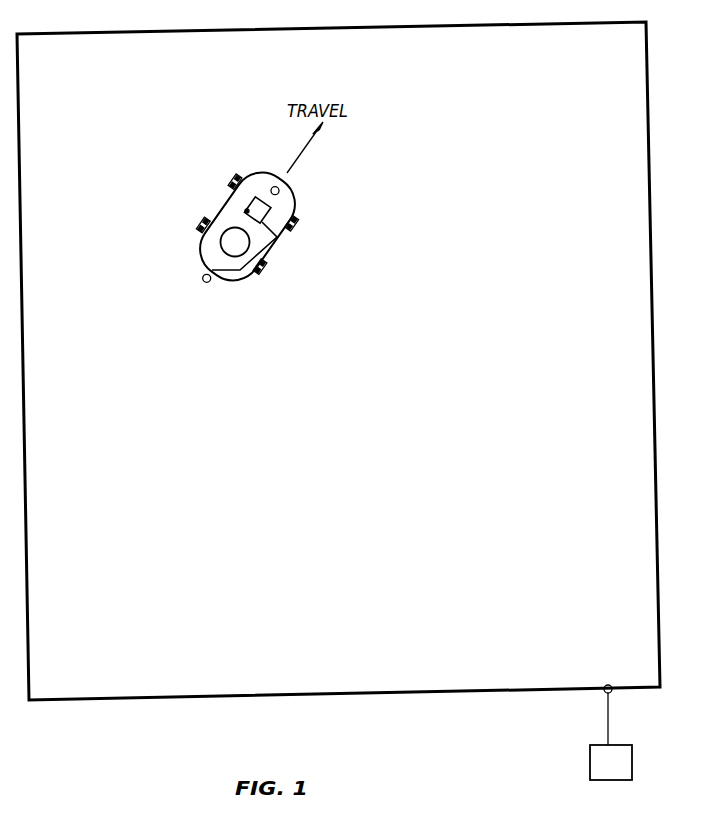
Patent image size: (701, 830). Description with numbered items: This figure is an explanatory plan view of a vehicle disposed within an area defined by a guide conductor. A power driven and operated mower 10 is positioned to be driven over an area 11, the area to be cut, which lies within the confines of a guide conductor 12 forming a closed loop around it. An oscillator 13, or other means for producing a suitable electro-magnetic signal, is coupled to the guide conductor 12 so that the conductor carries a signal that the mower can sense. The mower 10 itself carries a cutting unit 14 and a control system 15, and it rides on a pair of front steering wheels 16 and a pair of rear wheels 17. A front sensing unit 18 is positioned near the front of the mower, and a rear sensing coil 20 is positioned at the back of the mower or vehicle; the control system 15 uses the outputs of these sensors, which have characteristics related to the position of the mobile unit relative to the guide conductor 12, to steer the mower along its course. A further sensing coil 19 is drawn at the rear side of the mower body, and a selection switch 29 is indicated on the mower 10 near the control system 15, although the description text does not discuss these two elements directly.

The mower 10 is at (230, 290).
The area 11 is at (337, 538).
The guide conductor 12 is at (310, 29).
The oscillator 13 is at (611, 732).
The cutting unit 14 is at (232, 242).
The control system 15 is at (264, 216).
The front steering wheels 16 is at (251, 160).
The rear wheels 17 is at (200, 226).
The front sensing unit 18 is at (279, 188).
The sensing coil 19 is at (263, 270).
The rear sensing coil 20 is at (203, 281).
The selection switch 29 is at (247, 211).